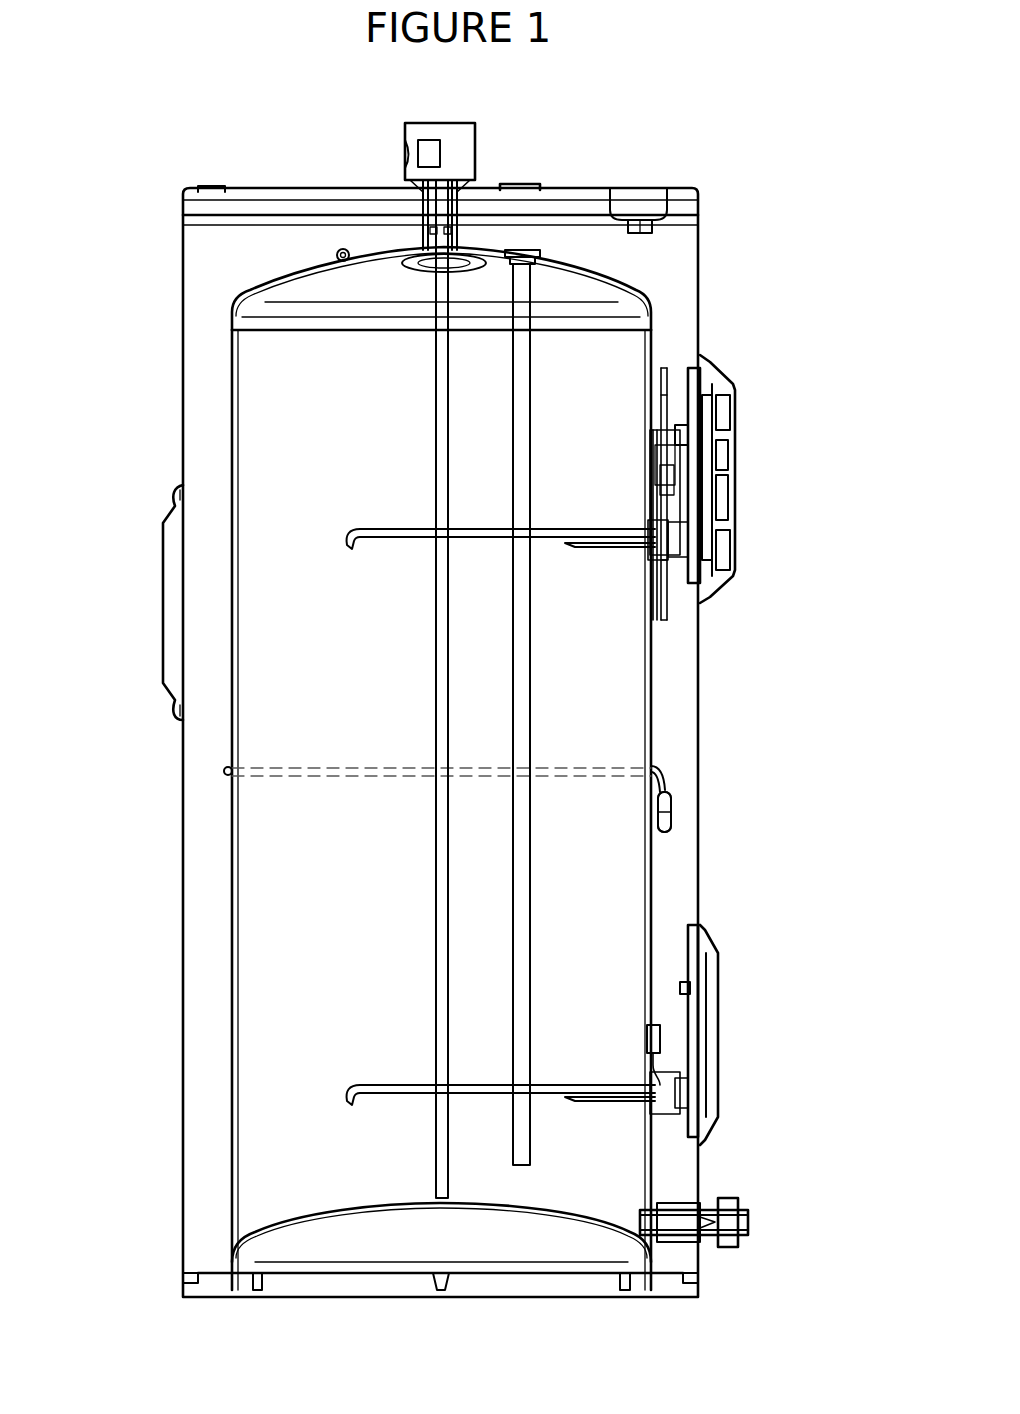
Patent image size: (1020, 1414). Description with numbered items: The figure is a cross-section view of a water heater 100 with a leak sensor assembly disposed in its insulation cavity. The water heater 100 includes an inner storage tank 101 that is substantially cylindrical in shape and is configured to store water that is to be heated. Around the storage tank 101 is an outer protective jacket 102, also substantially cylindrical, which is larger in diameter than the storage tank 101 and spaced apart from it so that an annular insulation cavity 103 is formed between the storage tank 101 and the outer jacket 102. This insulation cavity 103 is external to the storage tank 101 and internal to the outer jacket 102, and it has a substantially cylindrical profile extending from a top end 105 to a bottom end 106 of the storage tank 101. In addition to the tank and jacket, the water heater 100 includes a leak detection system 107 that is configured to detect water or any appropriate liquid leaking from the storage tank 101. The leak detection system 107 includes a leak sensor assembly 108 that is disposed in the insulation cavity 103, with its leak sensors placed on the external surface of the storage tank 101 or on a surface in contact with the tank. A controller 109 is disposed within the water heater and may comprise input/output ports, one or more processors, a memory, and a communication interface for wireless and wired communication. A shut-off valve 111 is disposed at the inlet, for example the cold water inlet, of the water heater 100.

The water heater 100 is at (720, 54).
The inner storage tank 101 is at (650, 897).
The outer protective jacket 102 is at (700, 700).
The annular insulation cavity 103 is at (674, 688).
The top end 105 is at (568, 263).
The bottom end 106 is at (333, 1265).
The leak detection system 107 is at (698, 798).
The leak sensor assembly 108 is at (746, 812).
The controller 109 is at (163, 612).
The shut-off valve 111 is at (472, 115).